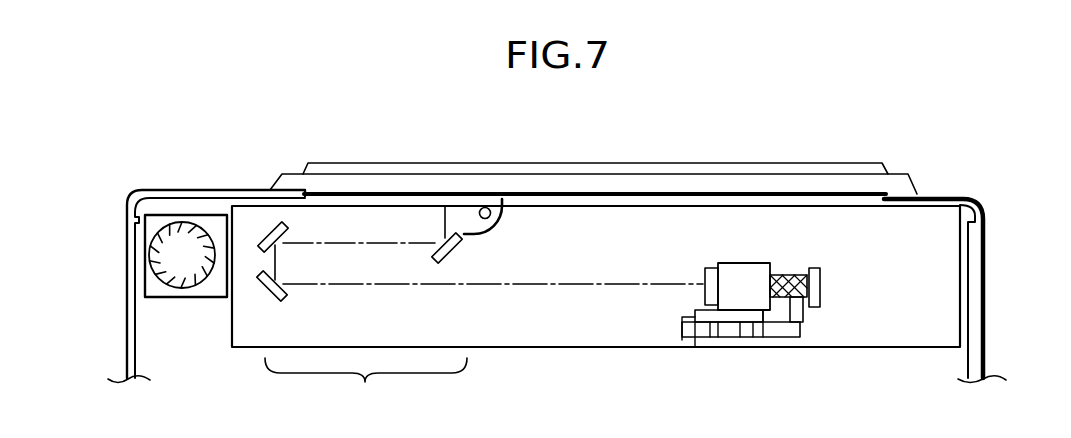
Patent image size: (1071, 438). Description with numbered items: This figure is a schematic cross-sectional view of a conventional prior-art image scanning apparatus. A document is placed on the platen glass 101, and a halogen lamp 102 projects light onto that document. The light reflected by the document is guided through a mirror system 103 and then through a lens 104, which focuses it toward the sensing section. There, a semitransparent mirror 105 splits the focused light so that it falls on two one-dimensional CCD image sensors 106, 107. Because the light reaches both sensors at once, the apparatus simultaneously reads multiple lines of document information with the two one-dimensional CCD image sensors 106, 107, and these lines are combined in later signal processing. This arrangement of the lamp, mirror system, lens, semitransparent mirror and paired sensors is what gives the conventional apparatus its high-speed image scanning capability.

The platen glass 101 is at (658, 202).
The halogen lamp 102 is at (481, 207).
The mirror system 103 is at (362, 318).
The lens 104 is at (748, 275).
The semitransparent mirror 105 is at (798, 277).
The one-dimensional CCD image sensor 106 is at (822, 283).
The one-dimensional CCD image sensor 107 is at (776, 328).